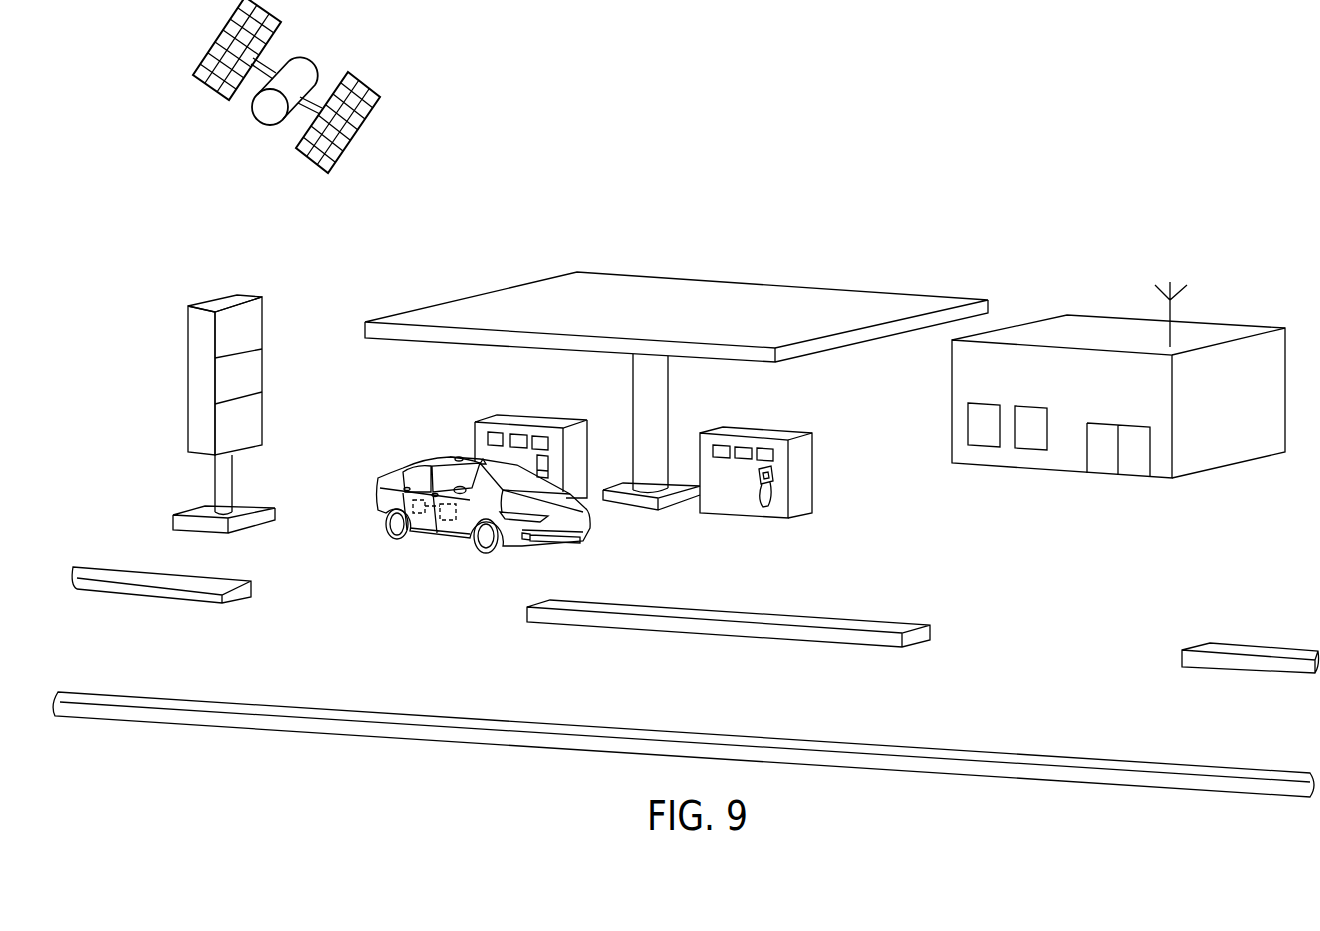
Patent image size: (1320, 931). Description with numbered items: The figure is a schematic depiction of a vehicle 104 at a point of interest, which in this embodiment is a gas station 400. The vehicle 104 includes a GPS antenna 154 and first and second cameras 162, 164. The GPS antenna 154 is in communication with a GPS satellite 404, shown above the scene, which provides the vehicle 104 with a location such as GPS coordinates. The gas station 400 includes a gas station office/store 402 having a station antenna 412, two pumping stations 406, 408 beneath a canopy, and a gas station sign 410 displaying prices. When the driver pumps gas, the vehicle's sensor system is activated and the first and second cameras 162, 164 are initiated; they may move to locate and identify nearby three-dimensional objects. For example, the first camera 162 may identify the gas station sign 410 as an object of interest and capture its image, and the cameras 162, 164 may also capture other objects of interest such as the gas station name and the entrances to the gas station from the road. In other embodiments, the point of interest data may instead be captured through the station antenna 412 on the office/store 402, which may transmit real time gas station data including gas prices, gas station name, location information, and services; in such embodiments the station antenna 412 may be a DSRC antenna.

The gas station 400 is at (828, 169).
The gas station office/store 402 is at (1102, 328).
The GPS satellite 404 is at (267, 112).
The pumping station 406 is at (803, 485).
The pumping station 408 is at (568, 422).
The gas station sign 410 is at (257, 312).
The station antenna 412 is at (1173, 312).
The vehicle 104 is at (484, 479).
The GPS antenna 154 is at (442, 522).
The first camera 162 is at (456, 458).
The second camera 164 is at (484, 460).